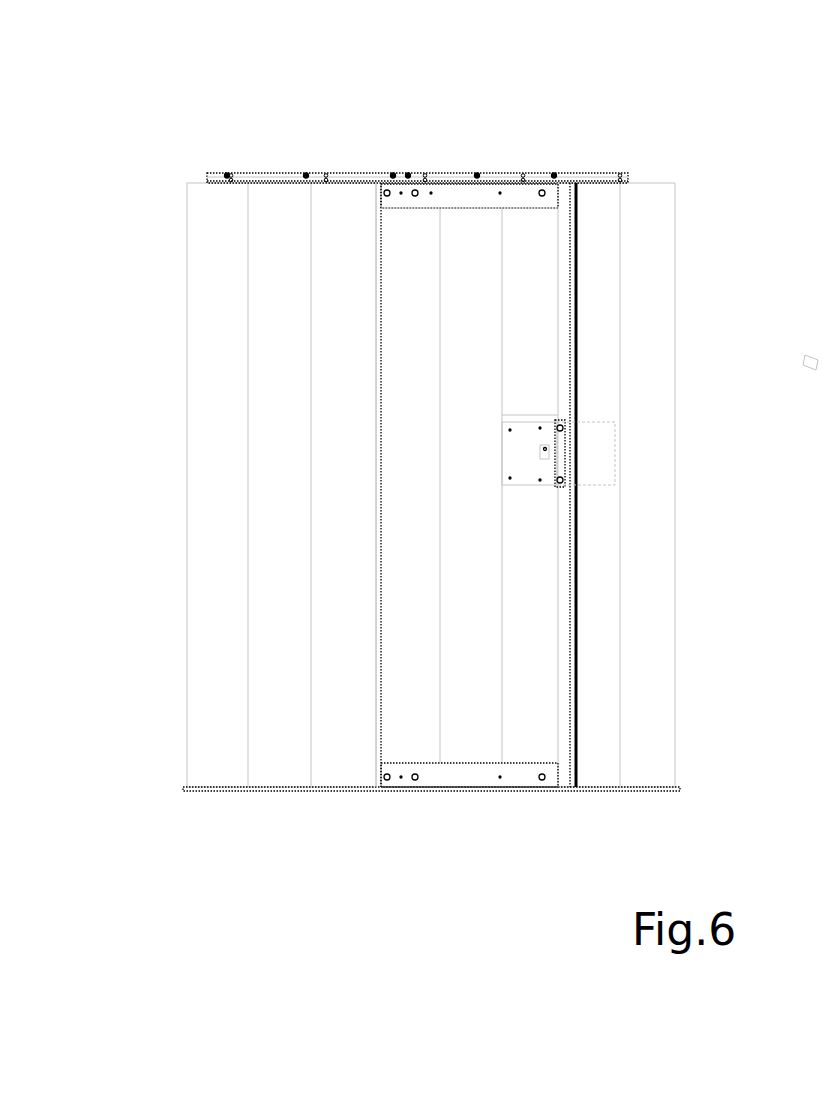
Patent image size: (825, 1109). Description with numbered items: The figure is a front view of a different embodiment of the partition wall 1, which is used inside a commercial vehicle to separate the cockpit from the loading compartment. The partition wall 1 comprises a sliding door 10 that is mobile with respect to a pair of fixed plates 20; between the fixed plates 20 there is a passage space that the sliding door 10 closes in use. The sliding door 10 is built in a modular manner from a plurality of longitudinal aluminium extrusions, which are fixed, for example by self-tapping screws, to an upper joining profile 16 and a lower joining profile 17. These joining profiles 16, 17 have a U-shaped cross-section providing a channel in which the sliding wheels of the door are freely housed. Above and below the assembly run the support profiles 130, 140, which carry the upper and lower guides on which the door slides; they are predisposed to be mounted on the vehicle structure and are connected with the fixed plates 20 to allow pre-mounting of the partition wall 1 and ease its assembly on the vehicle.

The partition wall 1 is at (456, 476).
The sliding door 10 is at (527, 476).
The upper joining profile 16 is at (548, 198).
The lower joining profile 17 is at (432, 770).
The fixed plate 20 is at (186, 486).
The upper support profile 130 is at (648, 160).
The lower support profile 140 is at (700, 808).